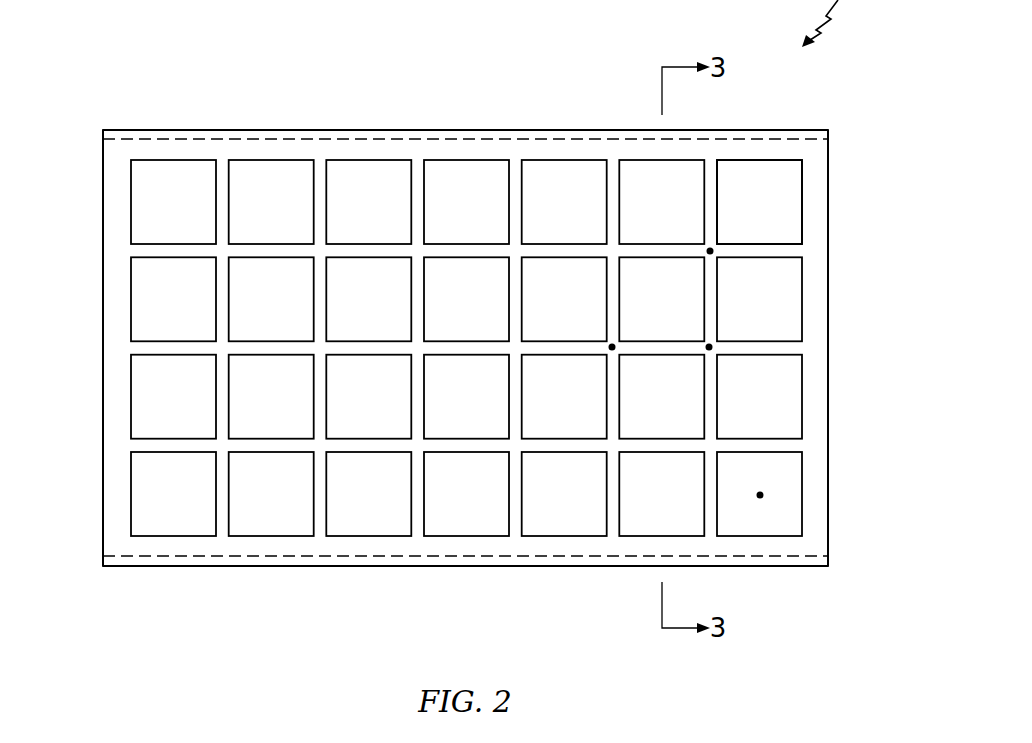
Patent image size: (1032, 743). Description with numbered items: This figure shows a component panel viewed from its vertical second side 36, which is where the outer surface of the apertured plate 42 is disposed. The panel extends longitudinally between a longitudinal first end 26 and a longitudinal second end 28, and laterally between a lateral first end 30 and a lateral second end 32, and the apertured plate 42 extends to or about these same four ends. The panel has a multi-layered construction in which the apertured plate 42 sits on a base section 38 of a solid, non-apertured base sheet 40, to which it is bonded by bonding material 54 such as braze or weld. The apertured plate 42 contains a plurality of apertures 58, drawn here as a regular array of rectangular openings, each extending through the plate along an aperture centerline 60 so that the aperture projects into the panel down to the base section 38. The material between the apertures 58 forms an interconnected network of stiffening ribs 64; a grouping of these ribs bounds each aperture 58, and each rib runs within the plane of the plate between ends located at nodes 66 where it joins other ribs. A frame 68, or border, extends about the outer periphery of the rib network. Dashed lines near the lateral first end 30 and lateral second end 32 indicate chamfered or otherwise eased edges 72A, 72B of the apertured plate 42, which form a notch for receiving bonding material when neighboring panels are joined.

The longitudinal first end 26 is at (102, 220).
The longitudinal second end 28 is at (828, 218).
The lateral first end 30 is at (221, 568).
The lateral second end 32 is at (222, 129).
The vertical second side 36 is at (115, 443).
The base section 38 is at (765, 183).
The base sheet 40 is at (759, 202).
The apertured plate 42 is at (834, 394).
The bonding material 54 is at (778, 293).
The aperture 58 is at (549, 213).
The aperture centerline 60 is at (760, 495).
The stiffening rib 64 is at (632, 258).
The node 66 is at (612, 347).
The frame 68 is at (104, 534).
The chamfered edge 72A is at (275, 556).
The chamfered edge 72B is at (290, 139).